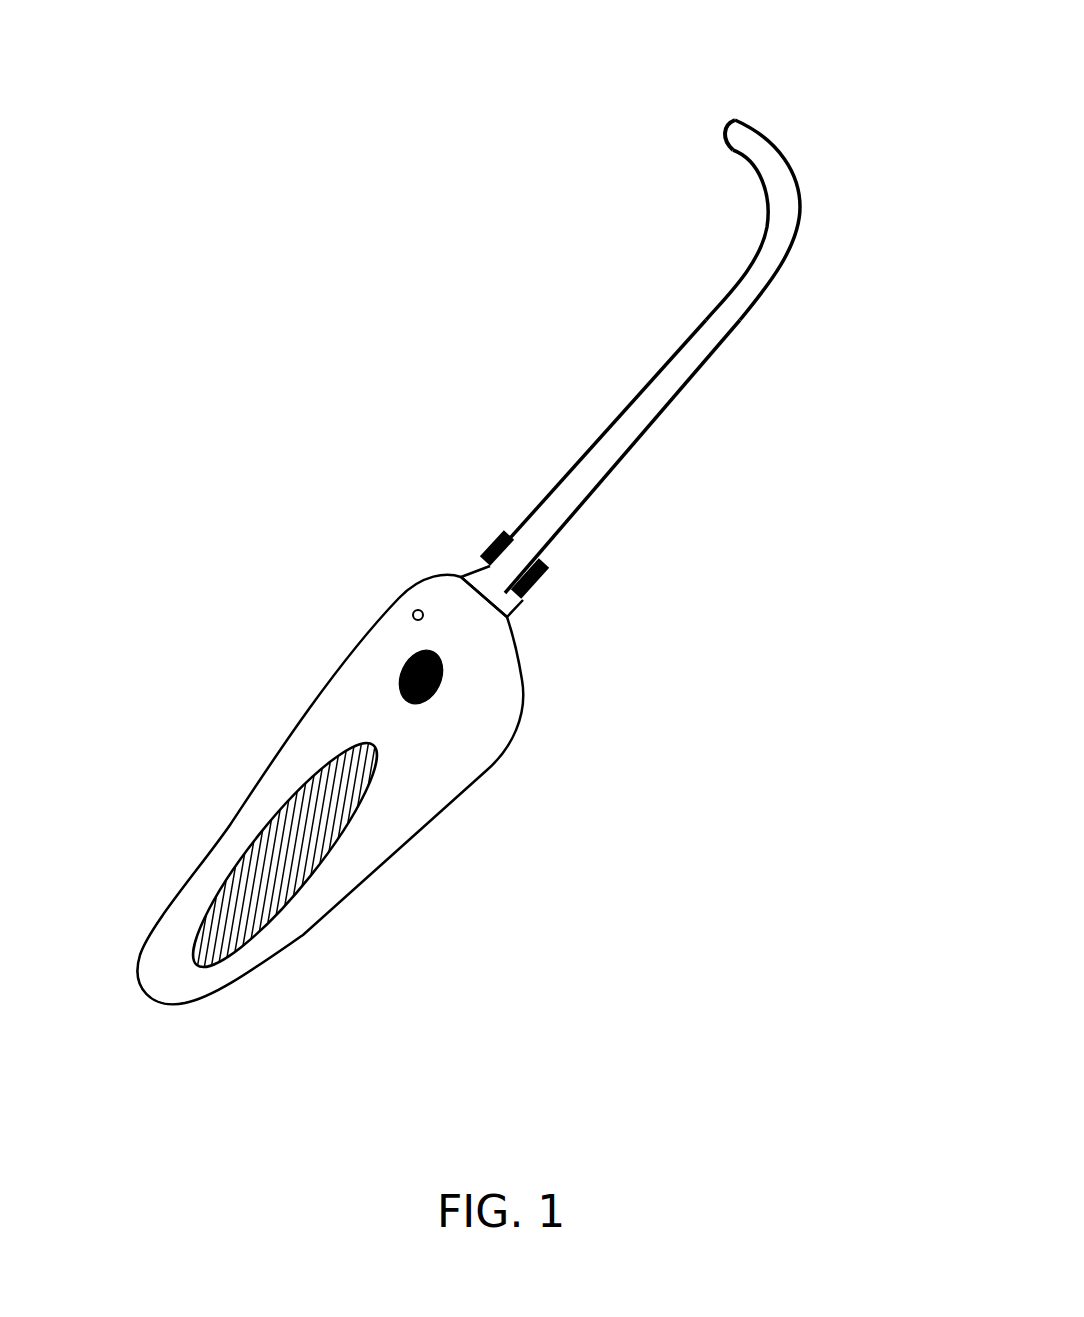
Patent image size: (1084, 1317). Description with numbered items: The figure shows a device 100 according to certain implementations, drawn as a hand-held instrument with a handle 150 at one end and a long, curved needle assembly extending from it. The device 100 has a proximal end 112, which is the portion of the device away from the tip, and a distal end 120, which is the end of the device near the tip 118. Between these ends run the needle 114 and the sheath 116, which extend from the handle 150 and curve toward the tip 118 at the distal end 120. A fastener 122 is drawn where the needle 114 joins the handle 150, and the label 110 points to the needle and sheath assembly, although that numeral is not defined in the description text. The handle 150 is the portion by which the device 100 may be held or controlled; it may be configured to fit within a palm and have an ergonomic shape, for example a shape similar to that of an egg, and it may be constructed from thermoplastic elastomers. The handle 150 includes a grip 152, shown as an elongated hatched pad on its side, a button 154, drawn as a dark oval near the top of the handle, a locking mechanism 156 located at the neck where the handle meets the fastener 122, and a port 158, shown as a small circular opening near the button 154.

The device 100 is at (145, 113).
The shaft assembly 110 is at (773, 549).
The proximal end 112 is at (346, 1022).
The needle 114 is at (620, 432).
The sheath 116 is at (707, 320).
The tip 118 is at (728, 117).
The distal end 120 is at (856, 230).
The fastener 122 is at (500, 543).
The handle 150 is at (483, 862).
The grip 152 is at (303, 825).
The button 154 is at (400, 697).
The locking mechanism 156 is at (493, 580).
The port 158 is at (412, 614).